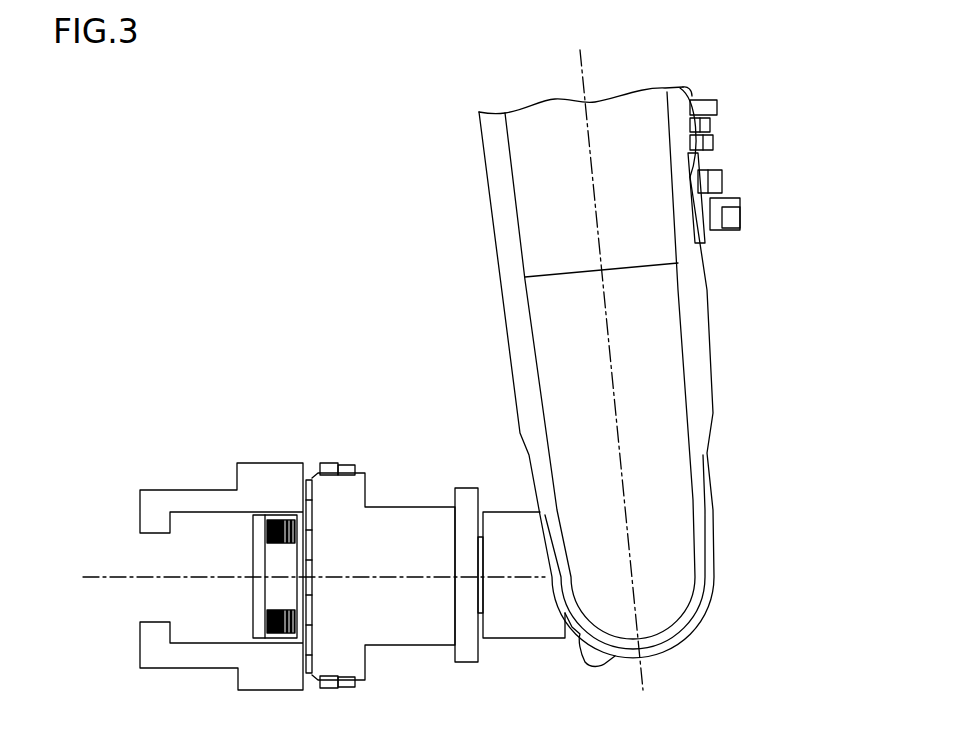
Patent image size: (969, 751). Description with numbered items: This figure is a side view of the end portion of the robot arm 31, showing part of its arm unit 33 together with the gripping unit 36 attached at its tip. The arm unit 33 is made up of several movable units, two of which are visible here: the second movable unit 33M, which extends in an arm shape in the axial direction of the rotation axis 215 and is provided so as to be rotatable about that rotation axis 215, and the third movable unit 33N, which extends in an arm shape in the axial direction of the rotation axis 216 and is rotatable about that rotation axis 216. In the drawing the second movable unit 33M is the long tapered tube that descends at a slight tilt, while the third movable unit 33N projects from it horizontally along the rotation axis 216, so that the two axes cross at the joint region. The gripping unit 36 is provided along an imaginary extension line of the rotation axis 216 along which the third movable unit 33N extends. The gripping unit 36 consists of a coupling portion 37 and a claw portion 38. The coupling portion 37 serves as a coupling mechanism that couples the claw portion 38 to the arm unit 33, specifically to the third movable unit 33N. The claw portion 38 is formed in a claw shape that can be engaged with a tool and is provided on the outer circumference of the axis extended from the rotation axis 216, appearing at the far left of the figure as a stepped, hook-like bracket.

The robot arm 31 is at (315, 179).
The arm unit 33 is at (652, 399).
The second movable unit 33M is at (663, 367).
The third movable unit 33N is at (525, 622).
The gripping unit 36 is at (337, 462).
The coupling portion 37 is at (402, 523).
The claw portion 38 is at (192, 657).
The rotation axis 215 is at (597, 232).
The rotation axis 216 is at (425, 578).